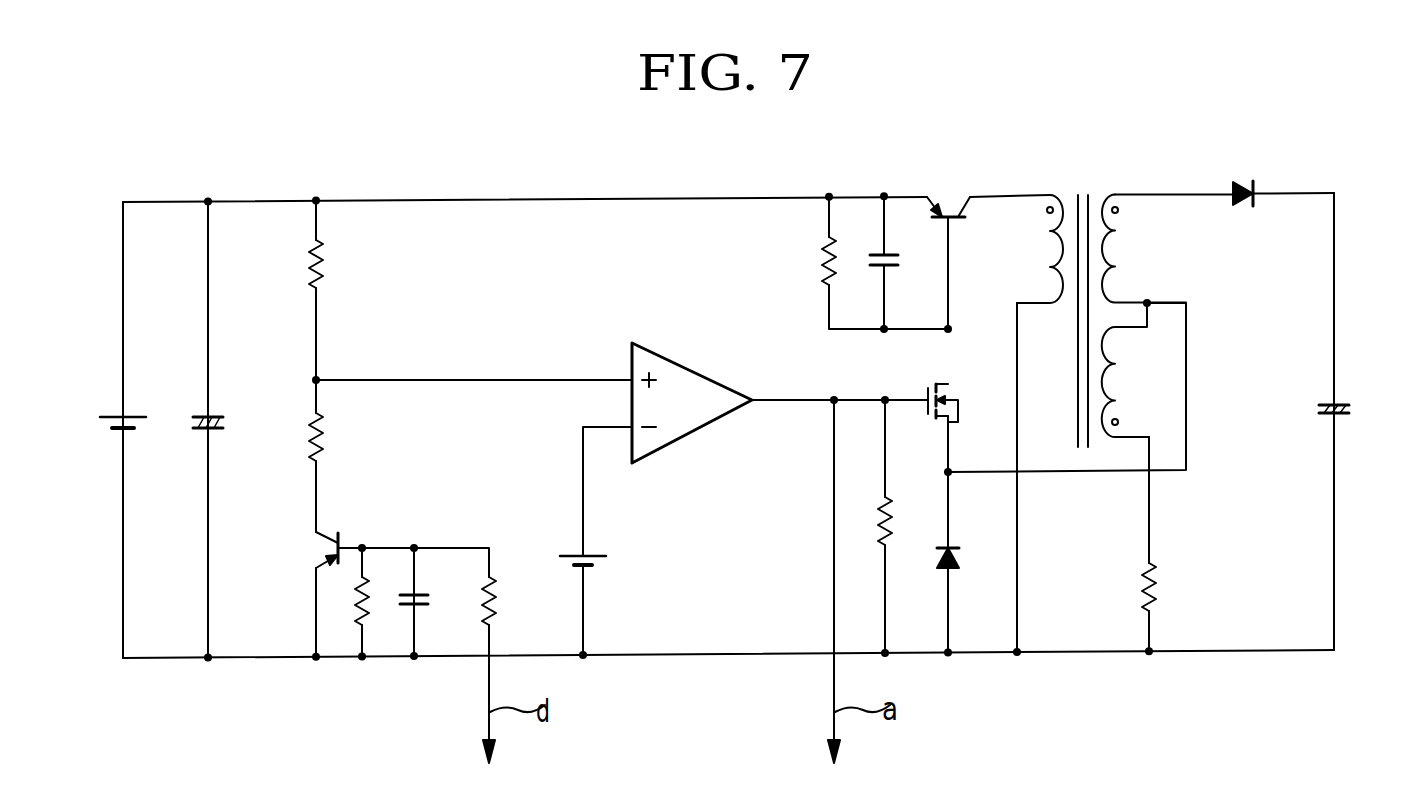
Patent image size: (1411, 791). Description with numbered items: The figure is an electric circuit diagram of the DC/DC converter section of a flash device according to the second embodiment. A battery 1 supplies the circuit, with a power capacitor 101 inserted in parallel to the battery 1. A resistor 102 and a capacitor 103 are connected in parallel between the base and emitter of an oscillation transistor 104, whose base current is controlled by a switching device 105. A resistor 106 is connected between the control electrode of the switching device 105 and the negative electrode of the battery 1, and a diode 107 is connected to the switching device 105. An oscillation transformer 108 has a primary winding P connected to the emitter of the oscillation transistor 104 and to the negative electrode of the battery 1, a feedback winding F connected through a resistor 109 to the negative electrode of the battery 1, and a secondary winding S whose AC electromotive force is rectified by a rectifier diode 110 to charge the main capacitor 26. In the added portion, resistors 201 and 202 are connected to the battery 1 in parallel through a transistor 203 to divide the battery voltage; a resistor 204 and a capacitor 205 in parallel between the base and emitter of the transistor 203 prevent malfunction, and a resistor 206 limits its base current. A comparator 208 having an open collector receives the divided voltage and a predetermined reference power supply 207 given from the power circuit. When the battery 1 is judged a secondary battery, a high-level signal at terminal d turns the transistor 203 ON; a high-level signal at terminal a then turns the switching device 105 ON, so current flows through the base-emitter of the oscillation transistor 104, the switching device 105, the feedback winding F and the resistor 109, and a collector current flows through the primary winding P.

The battery 1 is at (98, 416).
The power capacitor 101 is at (228, 424).
The resistor 102 is at (822, 265).
The capacitor 103 is at (898, 260).
The oscillation transistor 104 is at (940, 210).
The switching device 105 is at (932, 385).
The resistor 106 is at (897, 522).
The diode 107 is at (960, 562).
The oscillation transformer 108 is at (1080, 190).
The resistor 109 is at (1158, 585).
The rectifier diode 110 is at (1247, 180).
The main capacitor 26 is at (1350, 407).
The resistor 201 is at (325, 262).
The resistor 202 is at (325, 434).
The transistor 203 is at (333, 538).
The resistor 204 is at (369, 600).
The capacitor 205 is at (428, 600).
The resistor 206 is at (496, 594).
The reference power supply 207 is at (606, 559).
The comparator 208 is at (695, 372).